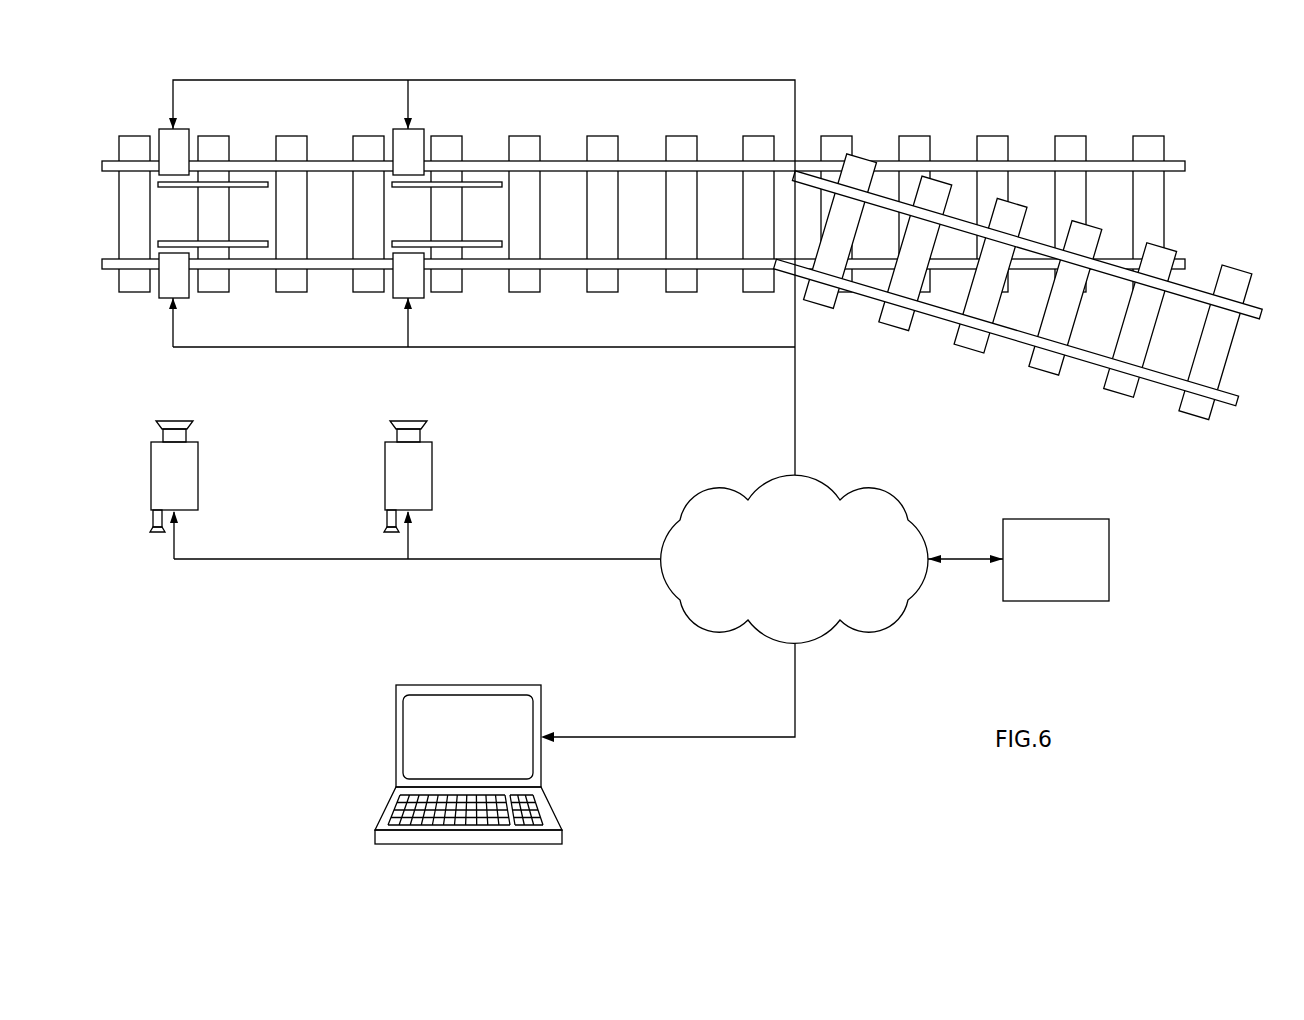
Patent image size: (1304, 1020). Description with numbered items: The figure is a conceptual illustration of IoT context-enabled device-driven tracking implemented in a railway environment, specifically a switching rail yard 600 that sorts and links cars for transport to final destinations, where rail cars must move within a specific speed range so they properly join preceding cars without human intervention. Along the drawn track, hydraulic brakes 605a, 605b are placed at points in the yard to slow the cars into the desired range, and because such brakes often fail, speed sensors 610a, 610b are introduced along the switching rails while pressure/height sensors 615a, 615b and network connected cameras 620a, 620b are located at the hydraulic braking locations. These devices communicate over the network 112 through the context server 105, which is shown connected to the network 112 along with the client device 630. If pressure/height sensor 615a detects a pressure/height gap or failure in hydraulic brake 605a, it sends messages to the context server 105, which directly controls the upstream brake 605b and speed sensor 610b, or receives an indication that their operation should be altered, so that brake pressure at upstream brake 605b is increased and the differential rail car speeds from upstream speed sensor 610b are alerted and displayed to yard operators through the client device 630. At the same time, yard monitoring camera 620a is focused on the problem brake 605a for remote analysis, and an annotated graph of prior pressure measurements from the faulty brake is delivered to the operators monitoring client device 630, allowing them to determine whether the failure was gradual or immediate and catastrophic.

The switching rail yard 600 is at (123, 683).
The hydraulic brake 605a is at (213, 241).
The hydraulic brake 605b is at (447, 241).
The speed sensor 610a is at (166, 127).
The speed sensor 610b is at (402, 127).
The pressure/height sensor 615a is at (167, 300).
The pressure/height sensor 615b is at (402, 300).
The network connected camera 620a is at (150, 477).
The network connected camera 620b is at (384, 477).
The network 112 is at (903, 501).
The context server 105 is at (1055, 519).
The client device 630 is at (480, 684).